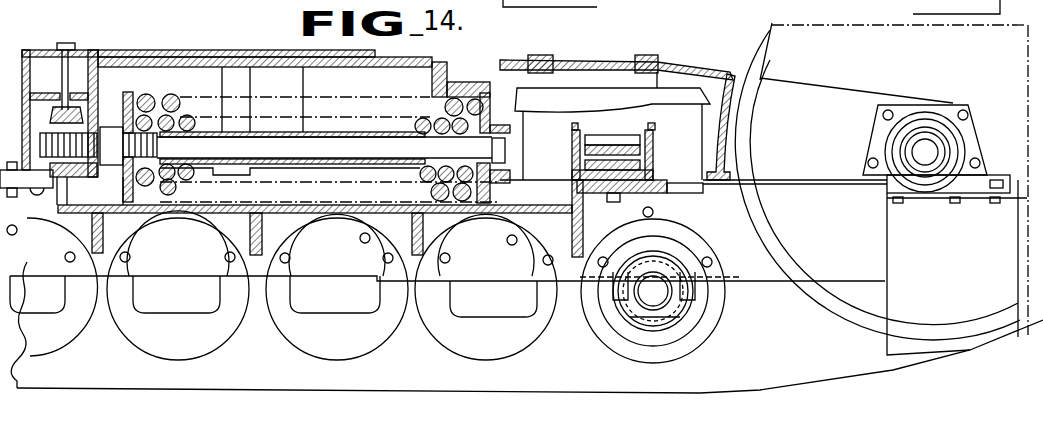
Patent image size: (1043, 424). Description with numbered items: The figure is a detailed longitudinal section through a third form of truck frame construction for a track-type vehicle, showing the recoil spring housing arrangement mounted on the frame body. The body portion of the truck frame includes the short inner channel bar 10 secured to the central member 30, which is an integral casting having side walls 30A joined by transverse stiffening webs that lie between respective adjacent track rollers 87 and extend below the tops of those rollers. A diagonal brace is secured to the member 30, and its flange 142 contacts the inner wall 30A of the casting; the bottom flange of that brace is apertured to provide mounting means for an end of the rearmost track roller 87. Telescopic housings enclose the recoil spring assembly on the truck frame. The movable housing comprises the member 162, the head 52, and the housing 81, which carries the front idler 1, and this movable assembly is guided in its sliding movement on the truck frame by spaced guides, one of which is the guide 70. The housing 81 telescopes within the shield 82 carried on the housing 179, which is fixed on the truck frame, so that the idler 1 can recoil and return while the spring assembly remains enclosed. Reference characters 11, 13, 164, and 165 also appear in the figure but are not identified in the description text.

The front idler 1 is at (763, 43).
The short inner channel bar 10 is at (820, 245).
The frame 11 is at (569, 6).
The shaft 13 is at (969, 7).
The central member 30 is at (657, 188).
The side walls 30A is at (283, 236).
The head 52 is at (487, 95).
The guide 70 is at (897, 3).
The housing 81 is at (405, 62).
The shield 82 is at (260, 52).
The track rollers 87 is at (133, 338).
The flange 142 is at (193, 270).
The member 162 is at (657, 38).
The shield 164 is at (810, 90).
The bracket 165 is at (763, 6).
The housing 179 is at (158, 57).